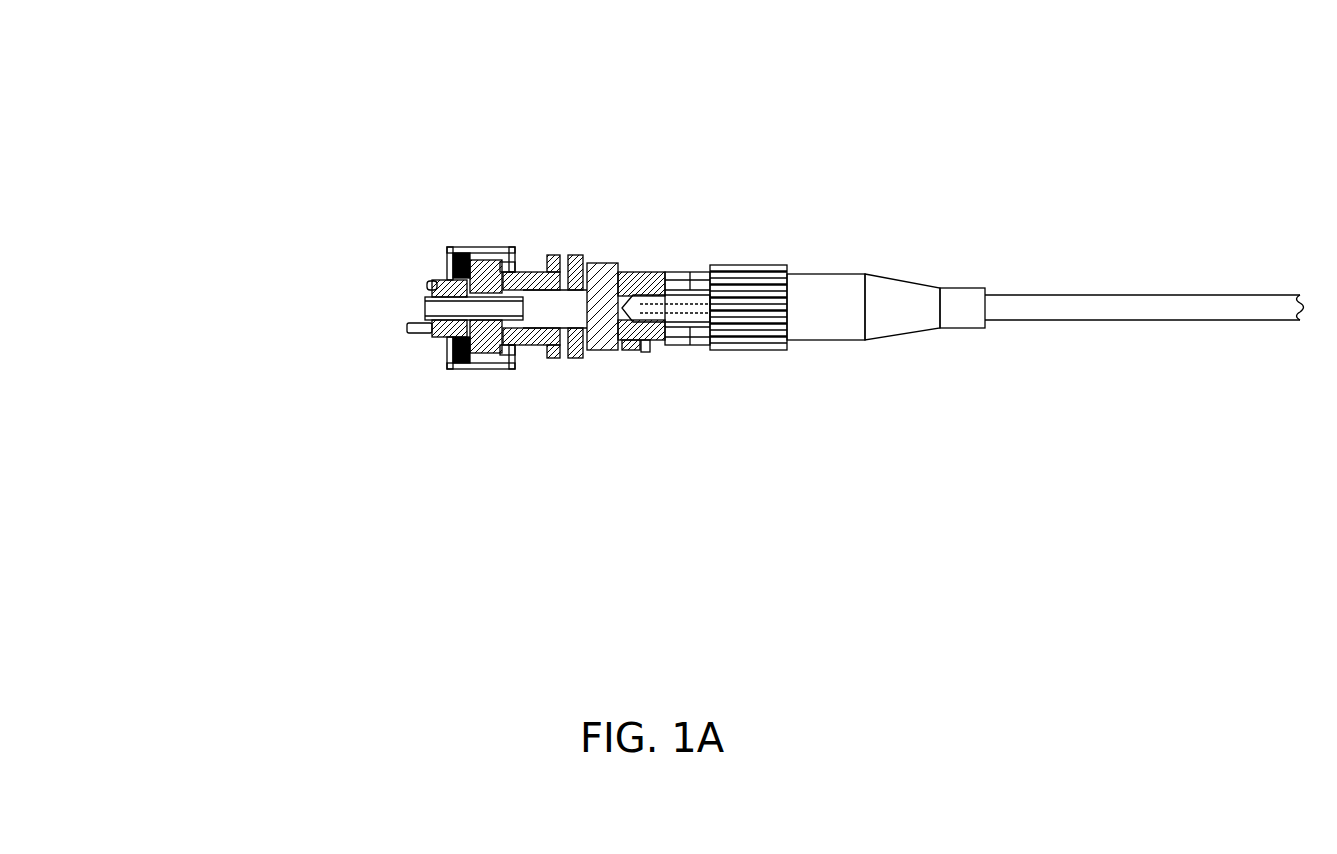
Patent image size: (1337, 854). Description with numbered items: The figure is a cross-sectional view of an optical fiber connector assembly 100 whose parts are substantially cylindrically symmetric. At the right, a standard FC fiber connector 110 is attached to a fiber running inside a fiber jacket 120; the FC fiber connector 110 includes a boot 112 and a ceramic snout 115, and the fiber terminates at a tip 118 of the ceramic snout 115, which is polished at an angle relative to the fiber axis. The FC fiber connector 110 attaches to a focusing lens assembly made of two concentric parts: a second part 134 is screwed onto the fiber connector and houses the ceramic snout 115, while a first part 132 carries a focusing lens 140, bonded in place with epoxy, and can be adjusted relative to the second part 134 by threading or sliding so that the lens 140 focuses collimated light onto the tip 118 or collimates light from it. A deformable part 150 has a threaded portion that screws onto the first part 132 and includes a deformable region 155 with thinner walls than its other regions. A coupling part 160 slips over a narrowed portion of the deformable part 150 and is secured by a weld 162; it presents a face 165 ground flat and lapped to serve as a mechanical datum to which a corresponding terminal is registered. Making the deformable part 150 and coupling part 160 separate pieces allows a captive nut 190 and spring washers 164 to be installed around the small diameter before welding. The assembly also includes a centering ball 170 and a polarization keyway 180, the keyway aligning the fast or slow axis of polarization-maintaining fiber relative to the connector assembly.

The optical fiber connector assembly 100 is at (706, 494).
The FC fiber connector 110 is at (745, 350).
The boot 112 is at (893, 337).
The ceramic snout 115 is at (670, 288).
The tip 118 is at (617, 340).
The fiber jacket 120 is at (1030, 293).
The first part 132 is at (628, 345).
The second part 134 is at (642, 274).
The focusing lens 140 is at (608, 290).
The deformable part 150 is at (572, 267).
The deformable region 155 is at (560, 267).
The coupling part 160 is at (523, 345).
The weld 162 is at (532, 268).
The spring washers 164 is at (500, 360).
The face 165 is at (447, 260).
The centering ball 170 is at (443, 345).
The polarization keyway 180 is at (398, 336).
The captive nut 190 is at (447, 243).